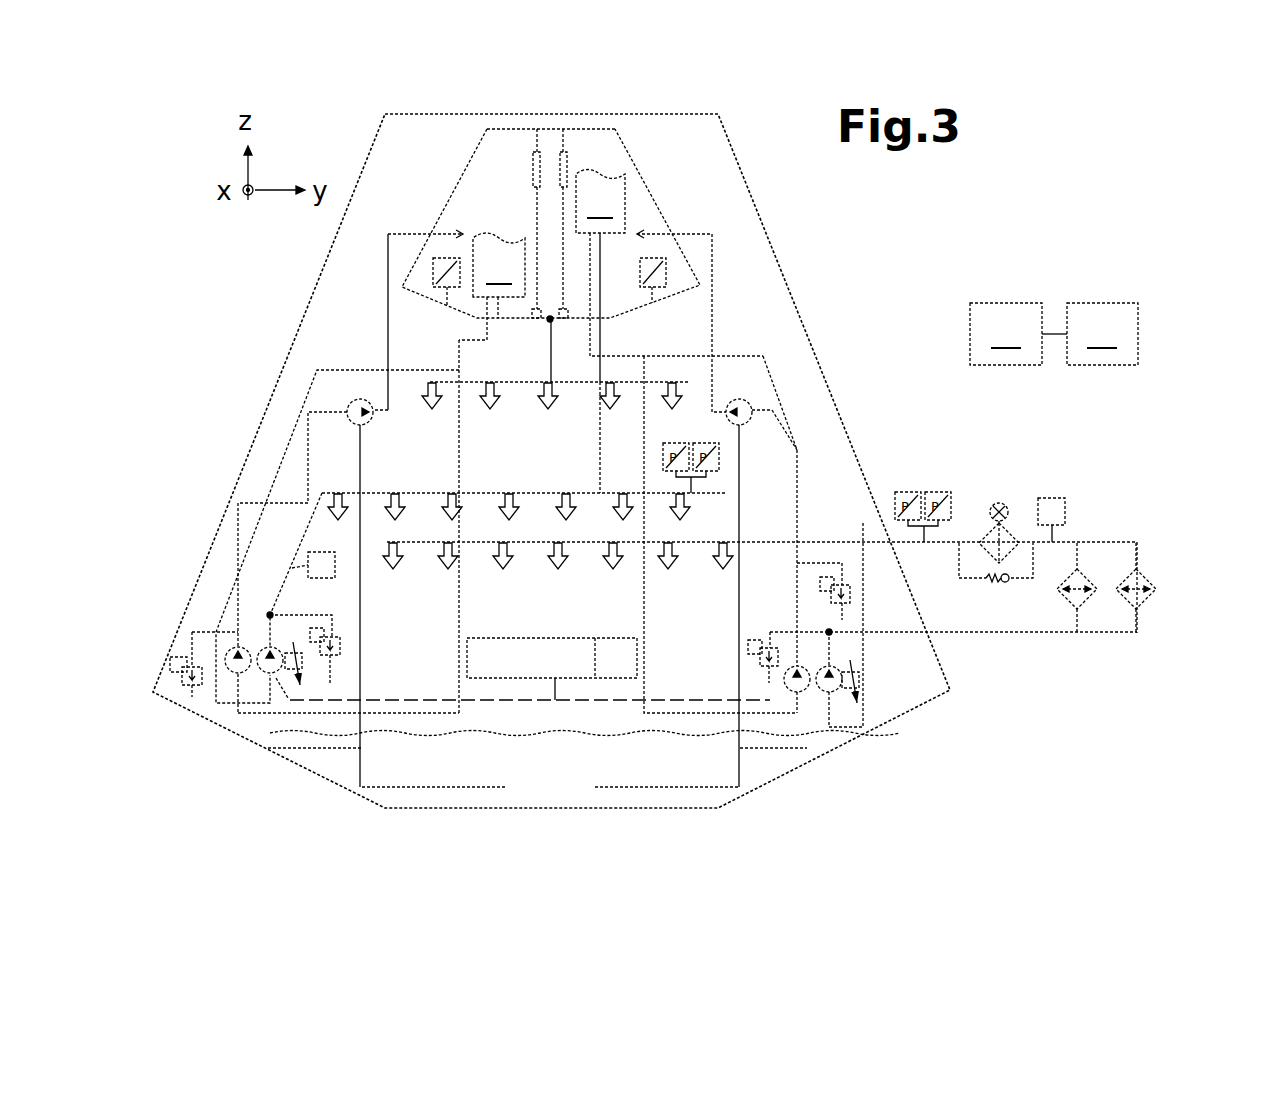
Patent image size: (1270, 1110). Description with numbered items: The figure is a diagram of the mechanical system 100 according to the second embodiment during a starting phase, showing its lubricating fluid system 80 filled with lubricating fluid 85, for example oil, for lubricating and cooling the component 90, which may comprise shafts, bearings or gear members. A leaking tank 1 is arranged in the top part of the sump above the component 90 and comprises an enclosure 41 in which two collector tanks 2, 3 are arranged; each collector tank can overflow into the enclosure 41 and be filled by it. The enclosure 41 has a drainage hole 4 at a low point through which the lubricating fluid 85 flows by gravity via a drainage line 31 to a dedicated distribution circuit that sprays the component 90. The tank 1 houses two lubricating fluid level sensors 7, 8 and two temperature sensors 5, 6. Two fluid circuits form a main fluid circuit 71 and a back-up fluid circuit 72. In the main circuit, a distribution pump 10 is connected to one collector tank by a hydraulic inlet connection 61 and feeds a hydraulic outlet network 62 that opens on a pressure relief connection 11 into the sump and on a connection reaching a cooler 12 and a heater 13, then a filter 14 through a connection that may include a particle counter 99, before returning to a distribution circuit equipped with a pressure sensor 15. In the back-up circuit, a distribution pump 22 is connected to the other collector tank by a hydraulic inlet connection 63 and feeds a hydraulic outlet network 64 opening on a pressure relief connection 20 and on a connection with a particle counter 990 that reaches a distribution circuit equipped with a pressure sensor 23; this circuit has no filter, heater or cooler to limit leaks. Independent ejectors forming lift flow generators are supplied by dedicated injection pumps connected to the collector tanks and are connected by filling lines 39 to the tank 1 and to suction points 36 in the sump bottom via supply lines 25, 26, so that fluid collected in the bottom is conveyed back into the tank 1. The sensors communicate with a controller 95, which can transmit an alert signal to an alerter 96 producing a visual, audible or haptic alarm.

The mechanical system 100 is at (305, 830).
The tank 1 is at (487, 129).
The enclosure 41 is at (450, 197).
The lubricating fluid level sensor 7 is at (537, 150).
The lubricating fluid level sensor 8 is at (563, 150).
The collector tank 3 is at (500, 238).
The collector tank 2 is at (627, 190).
The drainage hole 4 is at (551, 318).
The temperature sensor 6 is at (433, 270).
The temperature sensor 5 is at (666, 278).
The filling line 39 is at (388, 336).
The hydraulic inlet connection 61 is at (802, 420).
The back-up fluid circuit 72 is at (283, 422).
The hydraulic inlet connection 63 is at (277, 470).
The hydraulic outlet network 64 is at (292, 543).
The drainage line 31 is at (527, 350).
The pressure sensor 23 is at (663, 447).
The pressure sensor 15 is at (933, 492).
The filter 14 is at (1002, 504).
The particle counter 99 is at (1052, 498).
The heater 13 is at (1100, 600).
The cooler 12 is at (1145, 600).
The main fluid circuit 71 is at (1147, 543).
The hydraulic outlet network 62 is at (1147, 559).
The particle counter 990 is at (337, 565).
The pressure relief connection 20 is at (340, 645).
The component to be lubricated or cooled 90 is at (535, 638).
The distribution pump 22 is at (225, 658).
The pressure relief connection 11 is at (747, 648).
The distribution pump 10 is at (836, 672).
The lubricating fluid system 80 is at (905, 683).
The lubricating fluid 85 is at (455, 800).
The suction point 36 is at (300, 765).
The supply line 25 is at (475, 787).
The supply line 26 is at (615, 787).
The controller 95 is at (1018, 334).
The alerter 96 is at (1102, 334).